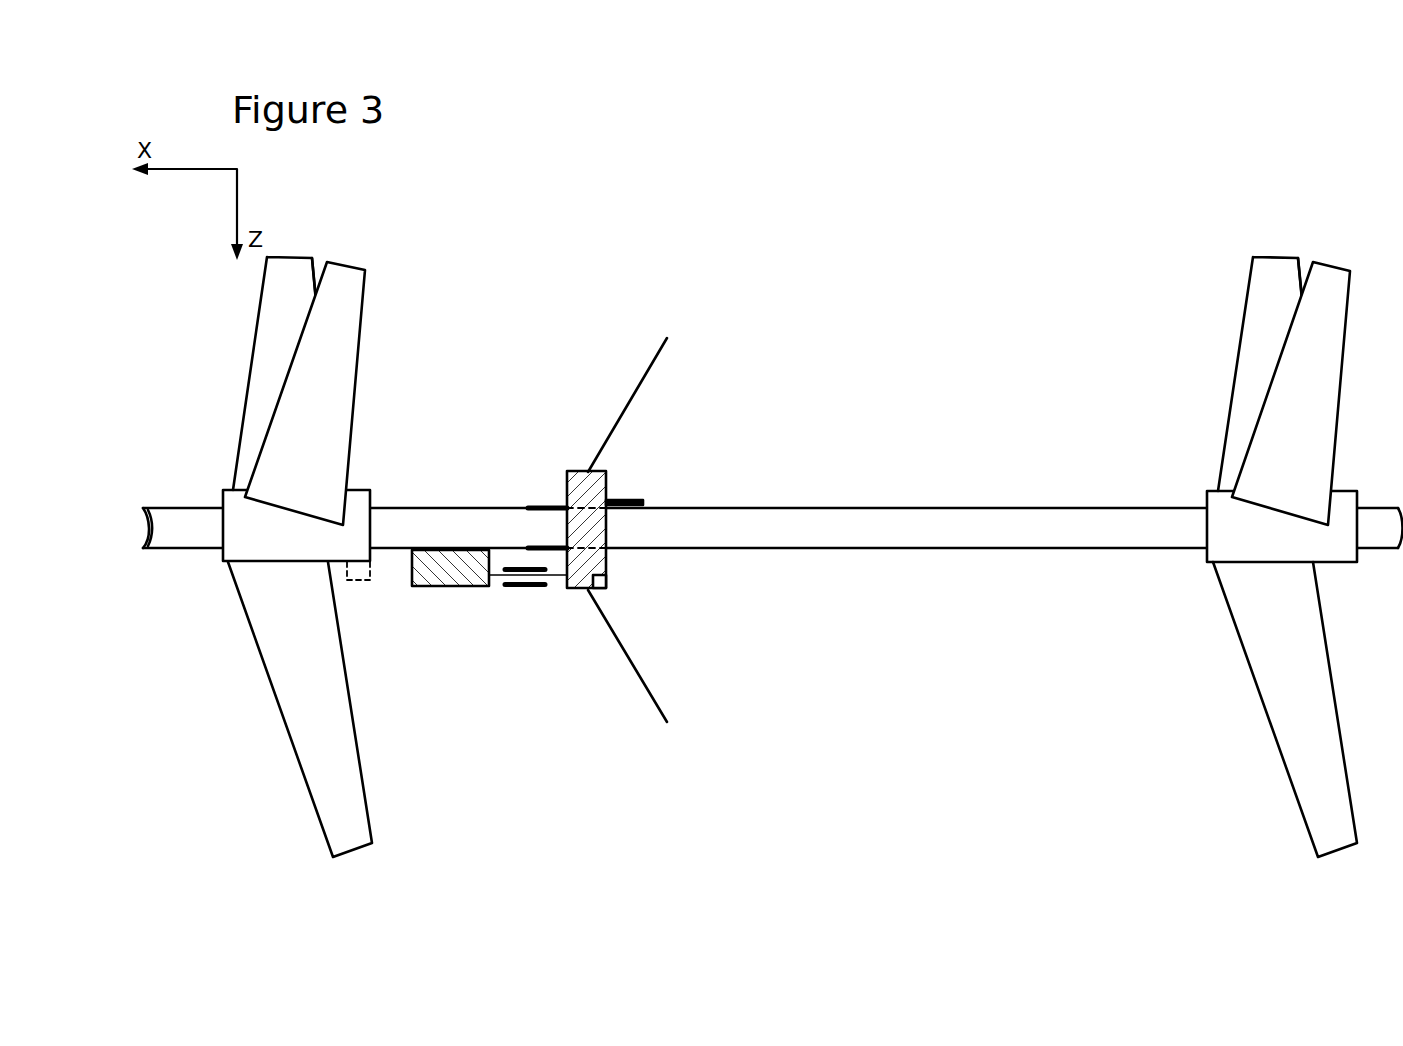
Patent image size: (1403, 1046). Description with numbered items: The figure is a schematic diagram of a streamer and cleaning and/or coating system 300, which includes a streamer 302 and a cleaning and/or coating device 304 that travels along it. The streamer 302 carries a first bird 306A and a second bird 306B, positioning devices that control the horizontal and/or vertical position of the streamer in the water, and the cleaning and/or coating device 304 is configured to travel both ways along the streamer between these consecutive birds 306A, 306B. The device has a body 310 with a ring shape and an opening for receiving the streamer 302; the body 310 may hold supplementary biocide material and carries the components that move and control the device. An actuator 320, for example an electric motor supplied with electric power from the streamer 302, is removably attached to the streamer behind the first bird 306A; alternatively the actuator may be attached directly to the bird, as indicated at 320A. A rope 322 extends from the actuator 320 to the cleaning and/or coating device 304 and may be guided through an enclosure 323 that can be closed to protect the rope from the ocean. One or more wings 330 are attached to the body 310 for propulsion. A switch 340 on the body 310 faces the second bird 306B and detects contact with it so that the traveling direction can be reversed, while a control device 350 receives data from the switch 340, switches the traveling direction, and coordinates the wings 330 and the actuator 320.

The streamer and cleaning and/or coating system 300 is at (787, 209).
The streamer 302 is at (435, 528).
The cleaning and/or coating device 304 is at (578, 590).
The first bird 306A is at (250, 352).
The second bird 306B is at (1240, 343).
The body 310 is at (567, 490).
The actuator 320 is at (440, 587).
The actuator attached to the bird 320A is at (355, 580).
The rope 322 is at (555, 578).
The enclosure 323 is at (523, 585).
The wings 330 is at (627, 400).
The switch 340 is at (623, 500).
The control device 350 is at (607, 582).